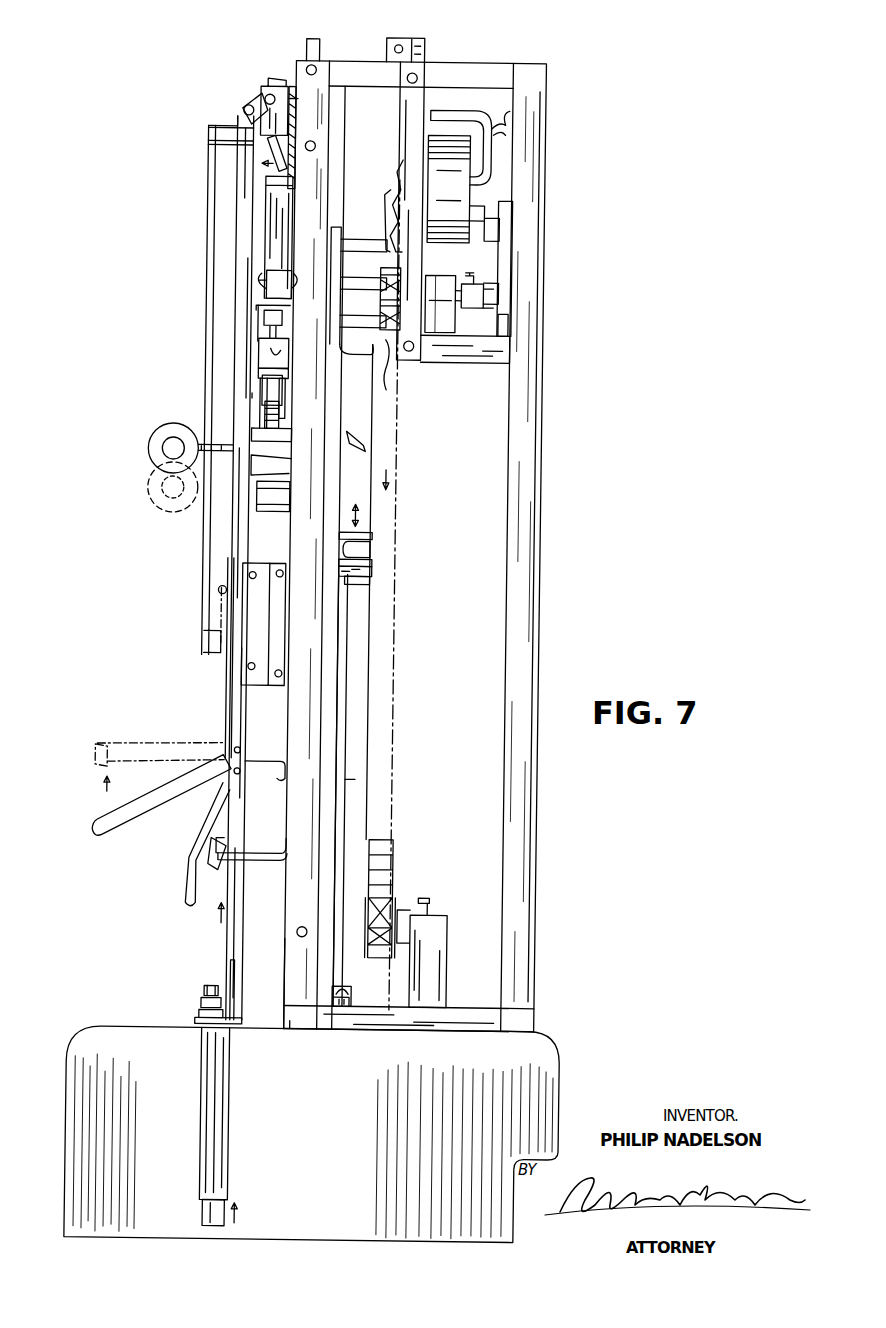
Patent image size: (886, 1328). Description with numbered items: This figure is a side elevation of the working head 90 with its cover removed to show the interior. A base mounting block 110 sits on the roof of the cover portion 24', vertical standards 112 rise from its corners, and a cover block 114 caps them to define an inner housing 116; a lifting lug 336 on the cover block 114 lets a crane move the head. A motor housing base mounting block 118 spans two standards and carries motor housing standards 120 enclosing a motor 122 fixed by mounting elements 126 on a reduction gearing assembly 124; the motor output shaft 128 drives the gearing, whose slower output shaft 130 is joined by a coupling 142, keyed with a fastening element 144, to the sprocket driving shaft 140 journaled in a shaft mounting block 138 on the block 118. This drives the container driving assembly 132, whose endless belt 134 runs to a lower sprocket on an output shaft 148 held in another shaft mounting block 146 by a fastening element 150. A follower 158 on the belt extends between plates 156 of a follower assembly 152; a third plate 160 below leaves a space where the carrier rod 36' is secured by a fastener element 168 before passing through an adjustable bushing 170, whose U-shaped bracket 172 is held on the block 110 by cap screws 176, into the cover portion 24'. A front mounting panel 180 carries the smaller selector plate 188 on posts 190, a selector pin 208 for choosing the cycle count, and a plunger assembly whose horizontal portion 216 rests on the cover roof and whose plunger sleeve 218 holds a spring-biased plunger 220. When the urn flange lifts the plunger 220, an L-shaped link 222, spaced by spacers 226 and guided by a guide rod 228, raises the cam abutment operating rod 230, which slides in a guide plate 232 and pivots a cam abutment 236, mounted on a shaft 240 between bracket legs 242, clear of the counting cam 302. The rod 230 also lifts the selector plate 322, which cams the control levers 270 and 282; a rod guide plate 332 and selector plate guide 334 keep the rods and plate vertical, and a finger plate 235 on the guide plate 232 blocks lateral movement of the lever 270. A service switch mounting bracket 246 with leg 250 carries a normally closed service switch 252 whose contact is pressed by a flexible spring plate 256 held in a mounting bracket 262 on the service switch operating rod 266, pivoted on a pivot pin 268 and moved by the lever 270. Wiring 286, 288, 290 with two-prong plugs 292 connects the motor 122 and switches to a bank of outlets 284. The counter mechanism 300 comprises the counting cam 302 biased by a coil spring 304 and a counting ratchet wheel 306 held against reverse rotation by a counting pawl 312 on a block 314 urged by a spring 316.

The cover portion 24' is at (332, 1135).
The carrier rod 36' is at (389, 770).
The working head apparatus 90 is at (562, 458).
The base mounting block 110 is at (428, 1016).
The vertical standards 112 is at (297, 1031).
The cover block 114 is at (488, 72).
The inner open housing 116 is at (549, 337).
The motor housing base mounting block 118 is at (469, 356).
The motor housing standards 120 is at (404, 122).
The motor 122 is at (500, 169).
The transmission or reduction gearing assembly 124 is at (392, 200).
The mounting elements 126 is at (478, 232).
The output shaft 128 is at (470, 208).
The output shaft 130 is at (485, 306).
The container driving assembly 132 is at (404, 675).
The endless driving chain or belt 134 is at (396, 588).
The shaft mounting block 138 is at (432, 332).
The sprocket driving shaft 140 is at (458, 298).
The coupling 142 is at (481, 294).
The fastening element 144 is at (471, 273).
The shaft mounting block 146 is at (448, 936).
The output shaft 148 is at (395, 915).
The fastening element 150 is at (432, 906).
The follower assembly 152 is at (367, 589).
The plates 156 is at (373, 534).
The follower 158 is at (361, 548).
The third plate 160 is at (339, 583).
The fastener element 168 is at (373, 573).
The bushing 170 is at (361, 991).
The bracket 172 is at (357, 1003).
The cap screws 176 is at (340, 1008).
The mounting panel 180 is at (318, 209).
The smaller plate 188 is at (205, 263).
The posts 190 is at (215, 130).
The selector pin 208 is at (148, 473).
The horizontal portion 216 is at (202, 1028).
The plunger sleeve 218 is at (233, 1191).
The plunger 220 is at (210, 1218).
The link 222 is at (212, 996).
The spacers 226 is at (207, 1009).
The guide rod 228 is at (236, 966).
The cam abutment operating rod 230 is at (243, 200).
The guide plate 232 is at (262, 689).
The finger plate 235 is at (230, 712).
The pivotable cam abutment 236 is at (268, 82).
The rotatable shaft 240 is at (256, 100).
The legs 242 is at (287, 90).
The service switch mounting bracket 246 is at (290, 110).
The leg 250 is at (272, 234).
The normally closed service switch 252 is at (262, 286).
The flexible spring plate 256 is at (262, 320).
The service switch spring plate mounting bracket 262 is at (254, 309).
The service switch operating rod 266 is at (258, 386).
The pivot pin 268 is at (275, 514).
The service switch operating rod control lever 270 is at (220, 607).
The automatic switch operating rod control lever 282 is at (98, 756).
The bank of outlets 284 is at (341, 345).
The wiring 286 is at (498, 124).
The wiring 288 is at (338, 262).
The wiring 290 is at (398, 268).
The two-prong plugs 292 is at (338, 322).
The counter mechanism 300 is at (262, 404).
The counting cam 302 is at (283, 397).
The coil spring 304 is at (280, 416).
The counting ratchet wheel 306 is at (290, 438).
The counting pawl 312 is at (253, 418).
The block 314 is at (286, 353).
The spring 316 is at (262, 376).
The selector plate 322 is at (236, 841).
The rod guide plate 332 is at (262, 763).
The selector plate guide 334 is at (262, 863).
The lifting lug 336 is at (418, 48).